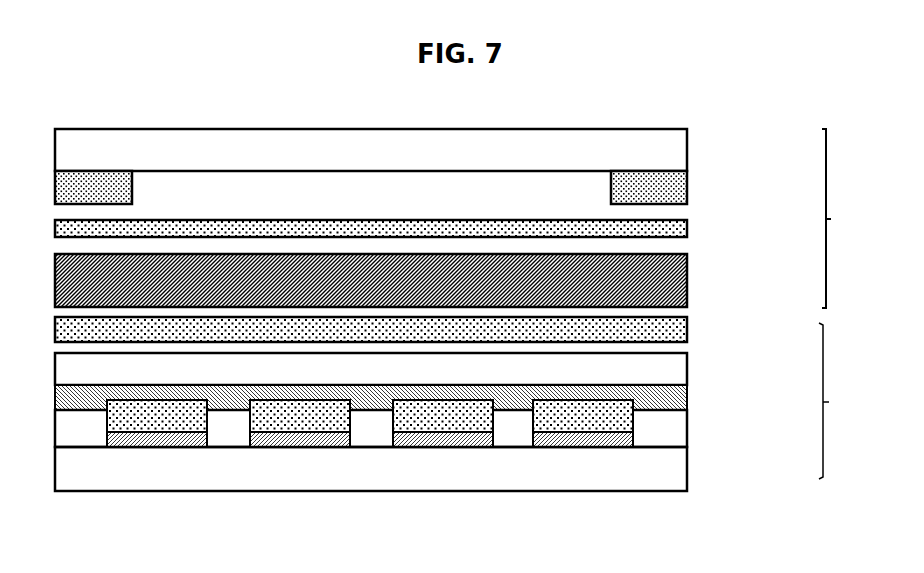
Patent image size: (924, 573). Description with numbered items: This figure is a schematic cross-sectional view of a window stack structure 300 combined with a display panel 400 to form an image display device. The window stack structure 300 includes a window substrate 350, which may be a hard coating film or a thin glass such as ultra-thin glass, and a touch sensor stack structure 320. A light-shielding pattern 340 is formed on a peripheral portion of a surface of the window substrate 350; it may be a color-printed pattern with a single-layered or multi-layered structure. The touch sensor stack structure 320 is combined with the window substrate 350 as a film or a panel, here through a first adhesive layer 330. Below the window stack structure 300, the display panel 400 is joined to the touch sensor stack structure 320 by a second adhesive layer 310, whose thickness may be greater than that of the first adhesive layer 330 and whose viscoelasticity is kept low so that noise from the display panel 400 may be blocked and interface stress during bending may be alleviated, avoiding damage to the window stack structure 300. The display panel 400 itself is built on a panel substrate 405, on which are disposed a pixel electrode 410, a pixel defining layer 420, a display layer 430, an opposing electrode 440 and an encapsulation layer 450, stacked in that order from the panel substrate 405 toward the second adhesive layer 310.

The window stack structure 300 is at (858, 218).
The second adhesive layer 310 is at (688, 316).
The touch sensor stack structure 320 is at (688, 270).
The first adhesive layer 330 is at (688, 228).
The light-shielding pattern 340 is at (684, 191).
The window substrate 350 is at (677, 149).
The display panel 400 is at (854, 401).
The panel substrate 405 is at (683, 485).
The pixel electrode 410 is at (633, 438).
The pixel defining layer 420 is at (687, 421).
The display layer 430 is at (633, 402).
The opposing electrode 440 is at (687, 383).
The encapsulation layer 450 is at (674, 363).